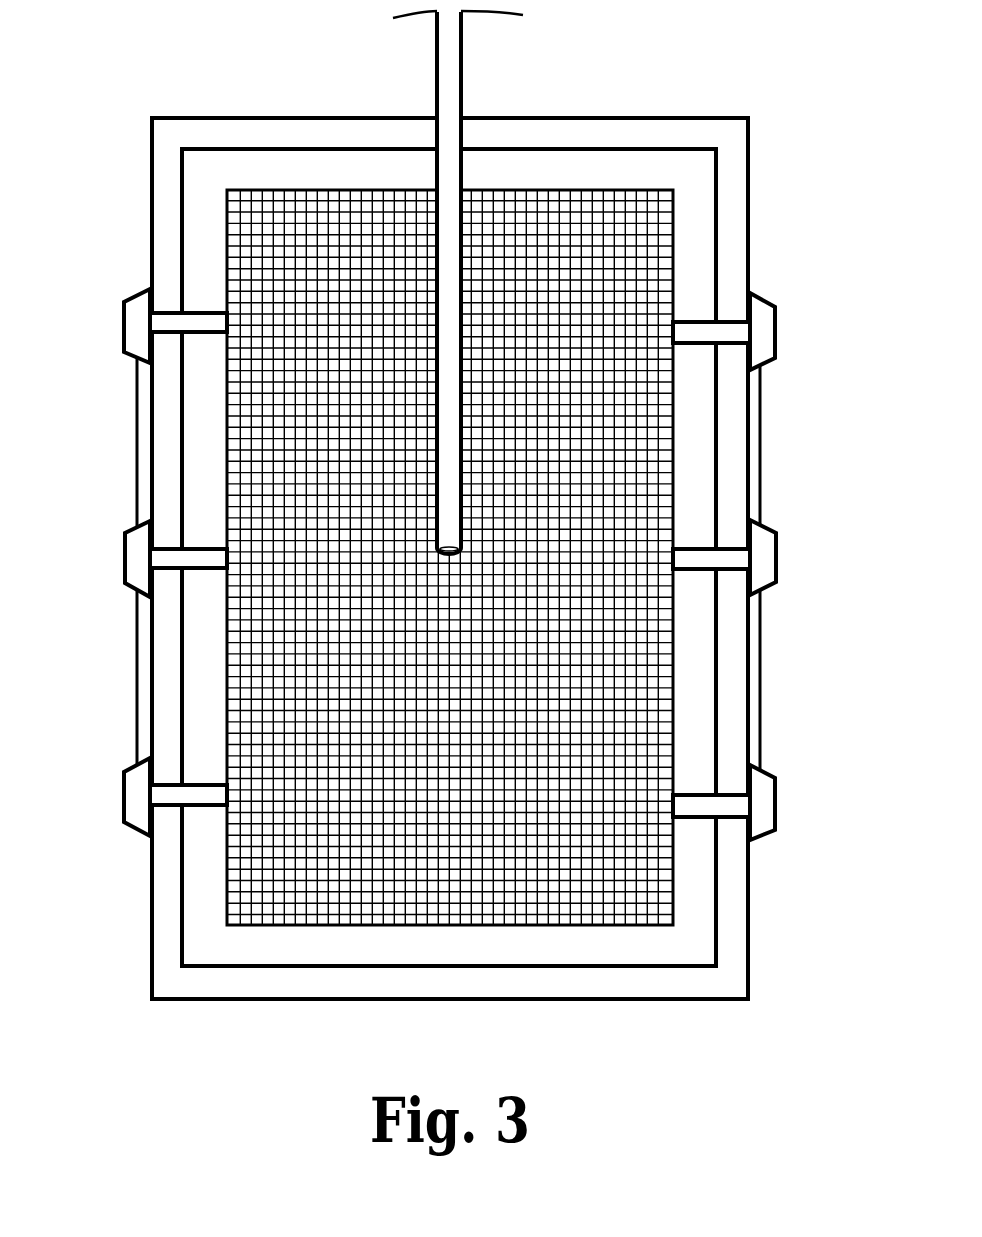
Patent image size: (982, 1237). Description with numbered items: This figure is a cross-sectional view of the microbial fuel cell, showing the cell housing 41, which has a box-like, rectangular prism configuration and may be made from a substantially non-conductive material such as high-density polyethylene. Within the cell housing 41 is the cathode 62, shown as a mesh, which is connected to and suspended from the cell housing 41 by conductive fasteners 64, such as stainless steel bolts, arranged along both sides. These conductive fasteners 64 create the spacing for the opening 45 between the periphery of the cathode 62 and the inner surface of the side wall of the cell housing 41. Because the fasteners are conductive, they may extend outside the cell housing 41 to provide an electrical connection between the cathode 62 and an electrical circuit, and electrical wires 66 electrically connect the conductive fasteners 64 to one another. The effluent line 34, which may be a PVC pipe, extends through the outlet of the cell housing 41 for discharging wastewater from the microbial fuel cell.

The effluent line 34 is at (463, 52).
The cell housing 41 is at (170, 133).
The opening 45 is at (690, 183).
The cathode 62 is at (676, 262).
The conductive fasteners 64 is at (135, 318).
The electrical wires 66 is at (137, 440).